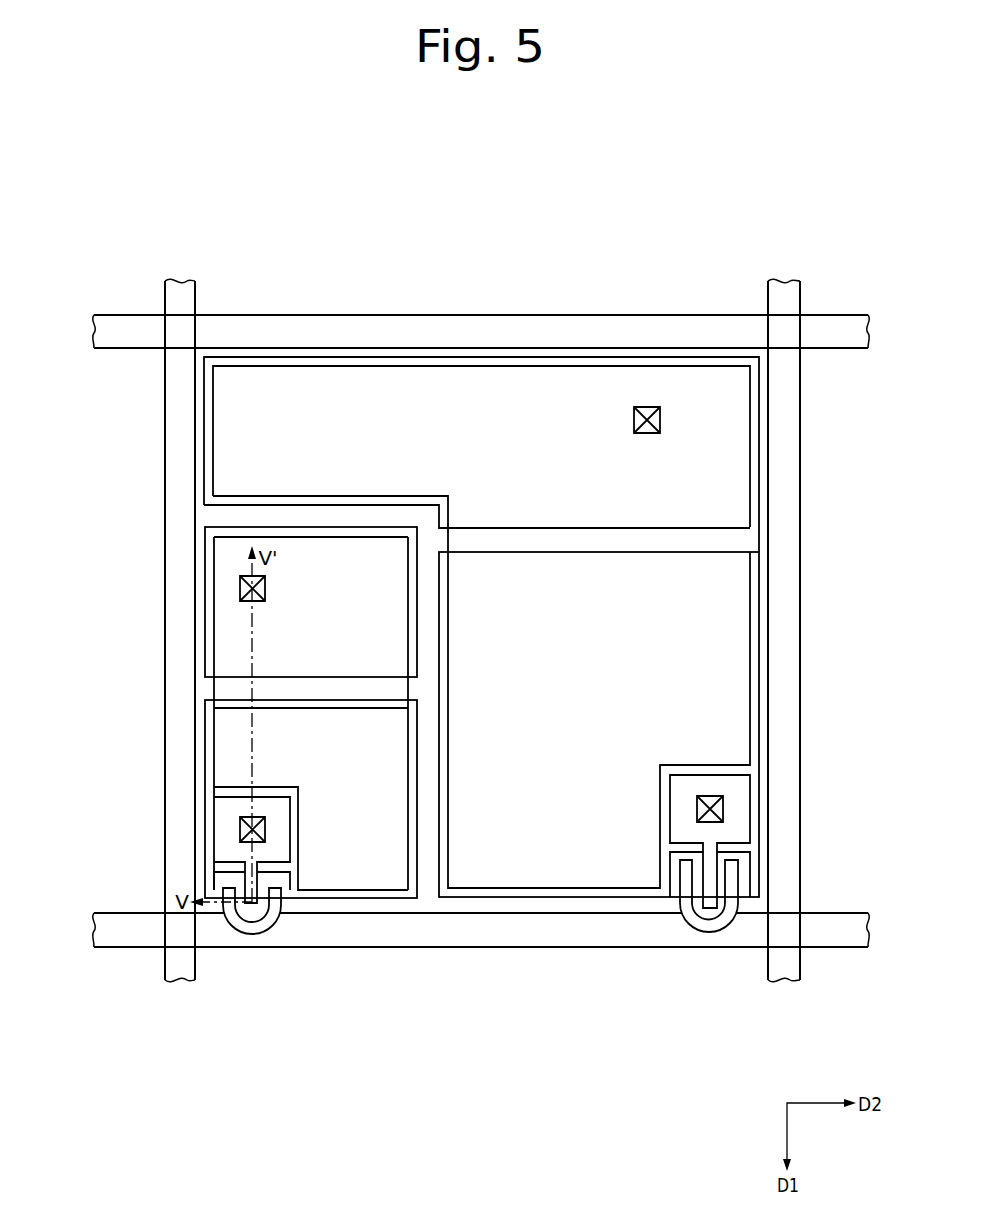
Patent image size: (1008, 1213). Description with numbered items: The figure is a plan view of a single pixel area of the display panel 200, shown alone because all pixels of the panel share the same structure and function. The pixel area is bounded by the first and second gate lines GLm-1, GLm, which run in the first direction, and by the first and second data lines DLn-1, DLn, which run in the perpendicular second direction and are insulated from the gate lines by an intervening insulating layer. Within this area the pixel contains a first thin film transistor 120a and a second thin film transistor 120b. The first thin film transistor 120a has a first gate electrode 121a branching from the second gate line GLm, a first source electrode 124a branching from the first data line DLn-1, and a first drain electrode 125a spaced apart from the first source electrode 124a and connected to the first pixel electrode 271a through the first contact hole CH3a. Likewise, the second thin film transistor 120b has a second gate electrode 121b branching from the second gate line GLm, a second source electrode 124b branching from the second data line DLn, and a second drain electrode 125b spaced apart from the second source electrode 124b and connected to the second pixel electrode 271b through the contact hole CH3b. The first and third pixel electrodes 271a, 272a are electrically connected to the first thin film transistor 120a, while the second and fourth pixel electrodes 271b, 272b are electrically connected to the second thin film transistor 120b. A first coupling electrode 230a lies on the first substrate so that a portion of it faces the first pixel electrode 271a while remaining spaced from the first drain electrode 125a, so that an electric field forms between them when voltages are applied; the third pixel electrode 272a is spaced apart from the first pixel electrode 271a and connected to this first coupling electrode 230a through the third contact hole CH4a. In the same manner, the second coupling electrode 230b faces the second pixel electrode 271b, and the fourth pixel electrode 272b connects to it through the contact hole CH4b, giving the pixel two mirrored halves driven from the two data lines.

The display panel 200 is at (708, 210).
The first thin film transistor 120a is at (251, 935).
The second thin film transistor 120b is at (697, 924).
The first gate electrode 121a is at (285, 912).
The second gate electrode 121b is at (743, 910).
The first source electrode 124a is at (253, 925).
The second source electrode 124b is at (705, 925).
The first drain electrode 125a is at (240, 906).
The second drain electrode 125b is at (705, 890).
The first coupling electrode 230a is at (355, 863).
The second coupling electrode 230b is at (513, 865).
The first pixel electrode 271a is at (393, 895).
The second pixel electrode 271b is at (573, 893).
The third pixel electrode 272a is at (204, 652).
The fourth pixel electrode 272b is at (759, 463).
The first contact hole CH3a is at (239, 829).
The contact hole CH3b is at (724, 808).
The third contact hole CH4a is at (239, 588).
The contact hole CH4b is at (661, 418).
The second gate line GLm is at (115, 915).
The first gate line GLm-1 is at (116, 326).
The second data line DLn is at (786, 292).
The first data line DLn-1 is at (180, 290).